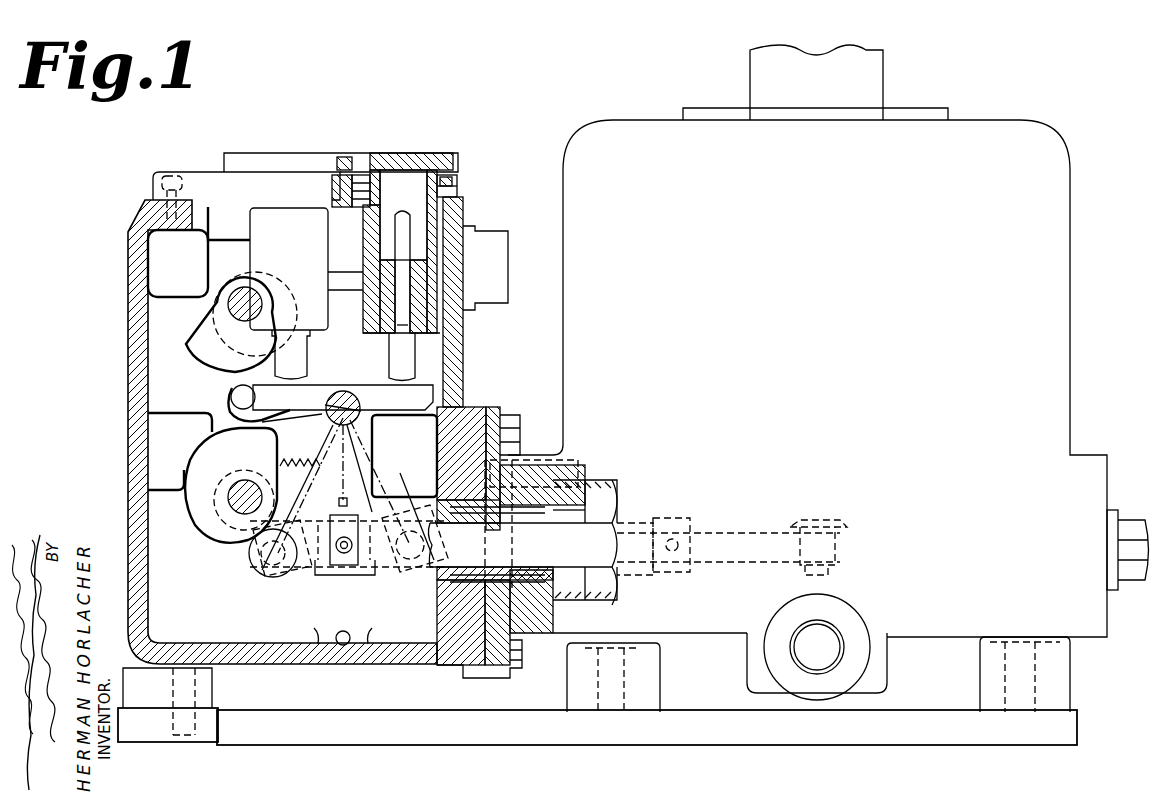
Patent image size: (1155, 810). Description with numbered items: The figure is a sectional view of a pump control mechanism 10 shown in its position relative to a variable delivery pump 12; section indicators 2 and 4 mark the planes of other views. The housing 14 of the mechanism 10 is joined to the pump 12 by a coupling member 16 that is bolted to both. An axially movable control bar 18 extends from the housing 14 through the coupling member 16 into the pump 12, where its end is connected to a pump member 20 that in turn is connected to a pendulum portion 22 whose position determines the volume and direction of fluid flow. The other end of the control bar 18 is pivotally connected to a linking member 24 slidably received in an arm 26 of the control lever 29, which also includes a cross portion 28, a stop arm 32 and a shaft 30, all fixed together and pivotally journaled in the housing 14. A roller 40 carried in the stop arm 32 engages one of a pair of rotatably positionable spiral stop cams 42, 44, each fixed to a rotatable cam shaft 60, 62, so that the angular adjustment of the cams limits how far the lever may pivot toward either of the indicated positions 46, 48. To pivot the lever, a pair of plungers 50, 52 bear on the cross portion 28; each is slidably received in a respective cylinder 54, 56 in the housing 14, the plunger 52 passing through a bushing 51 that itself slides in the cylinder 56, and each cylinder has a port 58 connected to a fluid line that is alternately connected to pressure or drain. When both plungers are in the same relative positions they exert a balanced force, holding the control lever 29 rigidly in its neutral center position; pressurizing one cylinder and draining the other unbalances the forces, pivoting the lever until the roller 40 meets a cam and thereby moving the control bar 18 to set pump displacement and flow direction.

The control mechanism 10 is at (633, 395).
The variable delivery pump 12 is at (828, 220).
The housing 14 is at (470, 454).
The coupling member 16 is at (538, 614).
The control bar 18 is at (563, 555).
The pump member 20 is at (760, 555).
The pendulum portion 22 is at (832, 518).
The linking member 24 is at (350, 568).
The arm 26 is at (335, 483).
The cross portion 28 is at (417, 406).
The control lever 29 is at (376, 436).
The shaft 30 is at (352, 392).
The stop arm 32 is at (275, 416).
The roller 40 is at (232, 392).
The spiral stop cam 42 is at (238, 354).
The spiral stop cam 44 is at (244, 462).
The position 46 is at (420, 568).
The position 48 is at (270, 572).
The plunger 50 is at (306, 350).
The bushing 51 is at (413, 302).
The plunger 52 is at (388, 350).
The cylinder 54 is at (302, 249).
The cylinder 56 is at (366, 303).
The port 58 is at (458, 187).
The cam shaft 60 is at (246, 287).
The cam shaft 62 is at (230, 492).
The section line 2- 2 is at (243, 148).
The section line 4- 4 is at (84, 400).